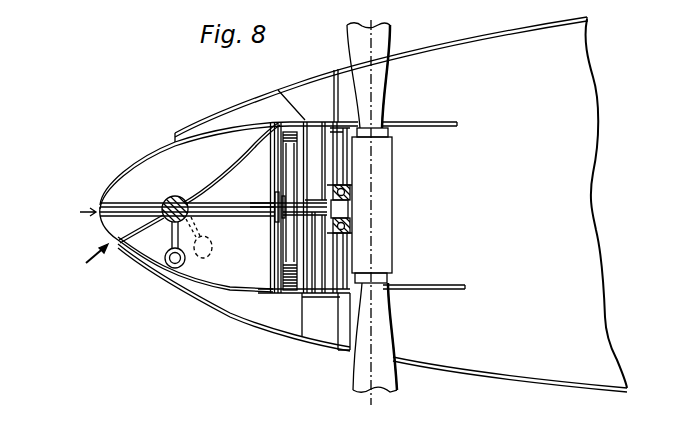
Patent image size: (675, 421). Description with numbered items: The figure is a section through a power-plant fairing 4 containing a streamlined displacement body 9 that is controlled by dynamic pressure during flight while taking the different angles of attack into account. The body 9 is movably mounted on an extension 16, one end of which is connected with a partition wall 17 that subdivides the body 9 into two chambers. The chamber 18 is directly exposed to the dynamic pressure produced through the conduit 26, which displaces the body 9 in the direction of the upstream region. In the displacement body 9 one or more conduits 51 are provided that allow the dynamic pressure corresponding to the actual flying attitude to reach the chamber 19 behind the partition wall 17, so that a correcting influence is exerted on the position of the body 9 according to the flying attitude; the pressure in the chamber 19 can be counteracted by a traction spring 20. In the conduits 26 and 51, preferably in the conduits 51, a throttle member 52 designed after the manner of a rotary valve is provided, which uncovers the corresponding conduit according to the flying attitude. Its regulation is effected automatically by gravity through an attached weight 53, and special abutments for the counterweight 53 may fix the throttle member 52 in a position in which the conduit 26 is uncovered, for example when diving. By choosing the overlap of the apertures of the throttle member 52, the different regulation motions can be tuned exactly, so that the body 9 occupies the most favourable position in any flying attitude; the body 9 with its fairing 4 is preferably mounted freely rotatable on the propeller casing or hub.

The conduit 26 is at (116, 203).
The throttle member 52 is at (172, 196).
The conduits 51 is at (232, 174).
The weight 53 is at (175, 268).
The streamlined body 9 is at (148, 265).
The fairing 4 is at (230, 313).
The chamber 18 is at (276, 263).
The partition wall 17 is at (289, 292).
The extension 16 is at (316, 294).
The chamber 19 is at (302, 294).
The traction spring 20 is at (277, 224).